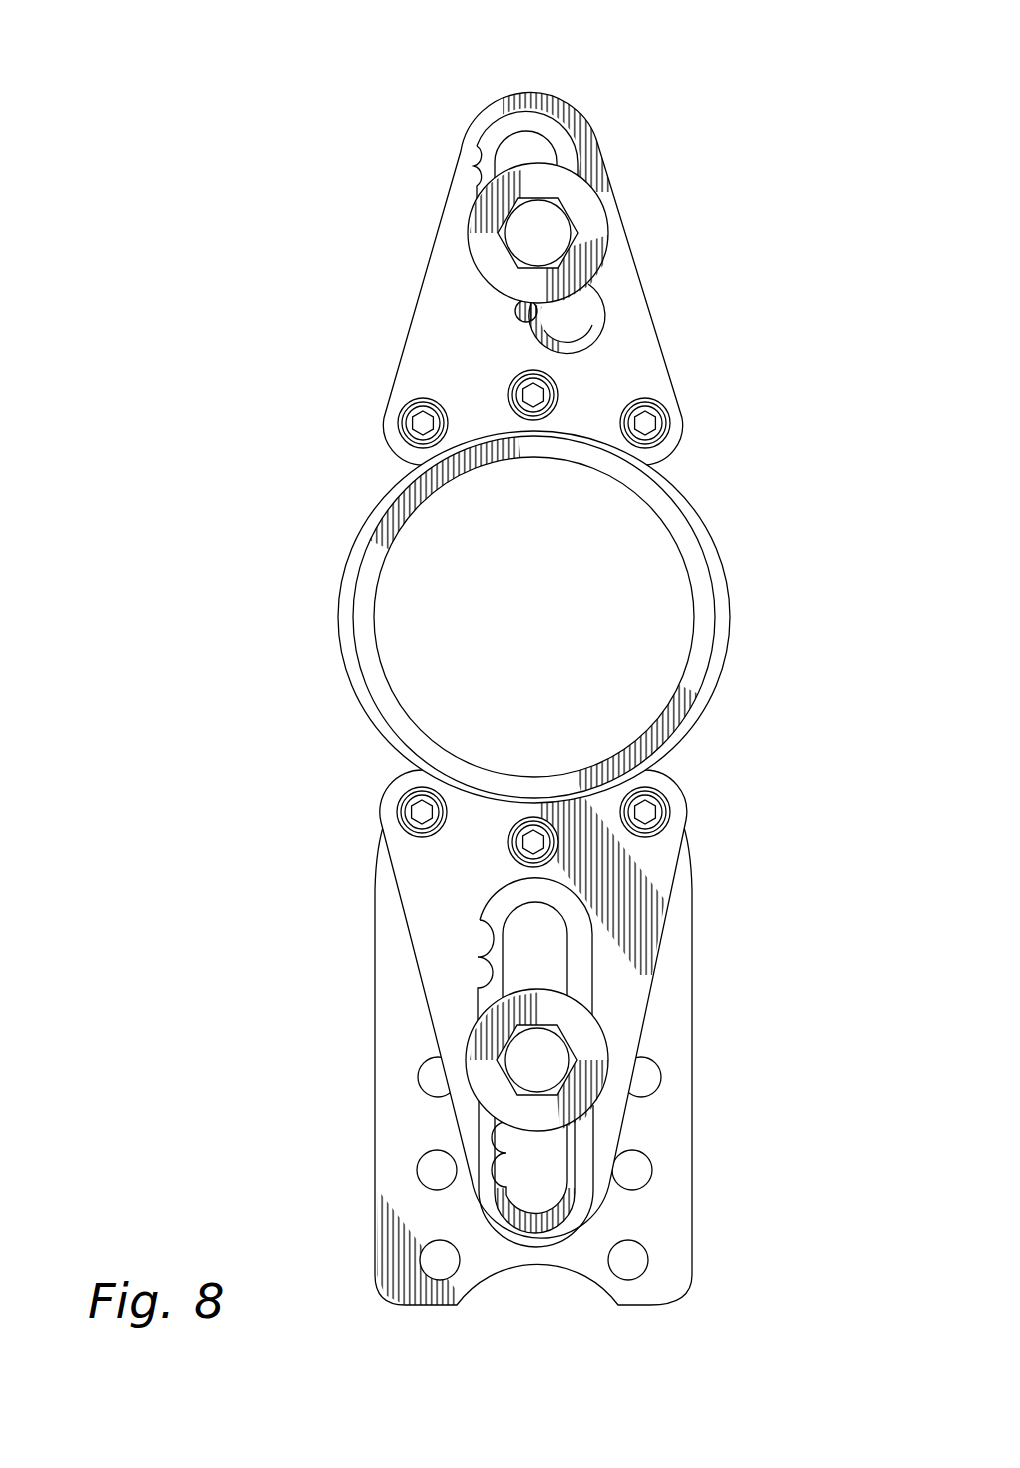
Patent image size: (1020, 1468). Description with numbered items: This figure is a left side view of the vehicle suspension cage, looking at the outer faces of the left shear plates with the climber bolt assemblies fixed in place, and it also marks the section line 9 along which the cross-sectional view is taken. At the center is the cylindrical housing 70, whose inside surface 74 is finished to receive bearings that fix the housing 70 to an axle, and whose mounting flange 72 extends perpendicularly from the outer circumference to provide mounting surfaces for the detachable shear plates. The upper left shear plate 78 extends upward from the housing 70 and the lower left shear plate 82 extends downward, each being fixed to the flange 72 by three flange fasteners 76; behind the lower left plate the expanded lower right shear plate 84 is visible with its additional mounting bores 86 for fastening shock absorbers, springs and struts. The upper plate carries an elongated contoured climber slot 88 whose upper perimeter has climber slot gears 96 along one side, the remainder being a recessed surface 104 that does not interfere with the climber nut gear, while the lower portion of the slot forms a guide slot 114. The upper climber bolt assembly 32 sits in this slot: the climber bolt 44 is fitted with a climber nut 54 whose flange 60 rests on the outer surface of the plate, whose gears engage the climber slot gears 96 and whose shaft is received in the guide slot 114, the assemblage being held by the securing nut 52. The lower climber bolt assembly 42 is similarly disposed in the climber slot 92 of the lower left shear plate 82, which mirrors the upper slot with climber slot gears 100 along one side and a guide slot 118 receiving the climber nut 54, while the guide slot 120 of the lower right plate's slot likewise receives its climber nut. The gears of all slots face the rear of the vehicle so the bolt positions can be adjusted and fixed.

The section line 9 is at (535, 52).
The climber bolt assembly 32 is at (526, 292).
The climber bolt assembly 42 is at (538, 993).
The climber bolt 44 is at (533, 233).
The securing nut 52 is at (566, 215).
The climber nut 54 is at (505, 647).
The climber nut flange 60 is at (598, 232).
The cylindrical housing 70 is at (534, 617).
The mounting flange 72 is at (337, 607).
The inside surface 74 is at (540, 778).
The flange fastener 76 is at (405, 410).
The upper left shear plate 78 is at (396, 343).
The lower left shear plate 82 is at (498, 993).
The lower right shear plate 84 is at (492, 1061).
The mounting bores 86 is at (432, 1170).
The climber slot 88 is at (522, 154).
The climber slot 92 is at (535, 1062).
The climber slot gears 96 is at (538, 322).
The climber slot gears 100 is at (542, 1177).
The recessed surface 104 is at (603, 323).
The guide slot 114 is at (497, 178).
The guide slot 118 is at (562, 985).
The guide slot 120 is at (593, 1168).